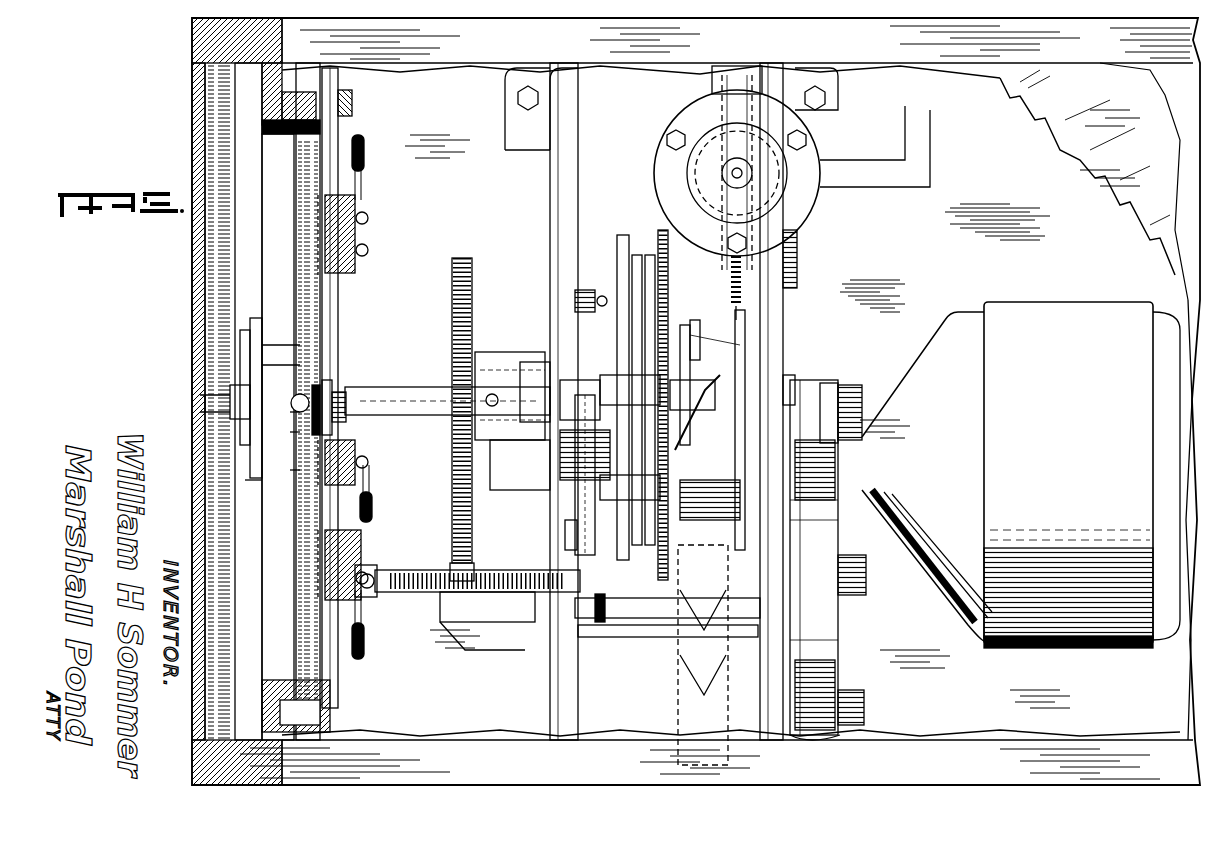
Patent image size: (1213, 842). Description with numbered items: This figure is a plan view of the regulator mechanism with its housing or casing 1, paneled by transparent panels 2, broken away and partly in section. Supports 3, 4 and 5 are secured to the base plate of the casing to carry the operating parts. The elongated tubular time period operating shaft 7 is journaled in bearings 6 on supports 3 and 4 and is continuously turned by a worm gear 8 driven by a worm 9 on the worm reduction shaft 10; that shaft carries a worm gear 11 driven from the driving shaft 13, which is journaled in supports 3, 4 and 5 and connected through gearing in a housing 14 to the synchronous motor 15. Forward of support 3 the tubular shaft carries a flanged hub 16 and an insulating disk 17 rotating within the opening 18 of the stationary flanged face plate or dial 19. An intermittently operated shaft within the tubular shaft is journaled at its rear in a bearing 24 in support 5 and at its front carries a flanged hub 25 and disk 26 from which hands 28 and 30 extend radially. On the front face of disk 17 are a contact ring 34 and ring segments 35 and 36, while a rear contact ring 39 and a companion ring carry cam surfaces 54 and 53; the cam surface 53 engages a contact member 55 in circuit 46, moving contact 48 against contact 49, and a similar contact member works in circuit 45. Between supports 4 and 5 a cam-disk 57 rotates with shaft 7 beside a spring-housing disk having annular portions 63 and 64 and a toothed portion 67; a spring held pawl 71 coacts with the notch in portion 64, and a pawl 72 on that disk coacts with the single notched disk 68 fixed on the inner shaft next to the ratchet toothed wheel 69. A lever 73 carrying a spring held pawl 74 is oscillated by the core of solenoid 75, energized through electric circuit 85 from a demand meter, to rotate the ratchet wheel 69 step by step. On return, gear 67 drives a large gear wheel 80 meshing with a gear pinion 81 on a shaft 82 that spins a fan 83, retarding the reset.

The housing or casing 1 is at (1185, 672).
The transparent panels 2 is at (1010, 98).
The support 3 is at (355, 127).
The support 4 is at (566, 170).
The support 5 is at (775, 322).
The bearings 6 is at (345, 418).
The tubular time period operating shaft 7 is at (392, 390).
The worm gear 8 is at (470, 288).
The worm 9 is at (440, 418).
The worm reduction shaft 10 is at (470, 566).
The worm gear 11 is at (416, 590).
The driving shaft 13 is at (405, 575).
The housing 14 is at (828, 560).
The synchronous motor 15 is at (1021, 475).
The flanged hub 16 is at (318, 332).
The disk 17 is at (268, 552).
The opening 18 is at (330, 682).
The flanged face plate or dial 19 is at (265, 692).
The bearing 24 is at (795, 384).
The flanged hub 25 is at (212, 428).
The plate or disk 26 is at (256, 328).
The hand 28 is at (258, 368).
The hand 30 is at (252, 344).
The contact ring 34 is at (263, 246).
The segment of a ring 35 is at (262, 400).
The segment of a ring 36 is at (262, 527).
The contact ring 39 is at (300, 242).
The circuit 45 is at (375, 507).
The circuit 46 is at (368, 155).
The contact 48 is at (318, 388).
The contact 49 is at (332, 392).
The cam surface 53 is at (302, 470).
The cam surface 54 is at (300, 436).
The contact member 55 is at (300, 415).
The cam-disk 57 is at (617, 272).
The annular portion 63 is at (652, 268).
The annular portion 64 is at (636, 258).
The annular toothed portion 67 is at (660, 236).
The single notched disk 68 is at (700, 340).
The ratchet toothed wheel 69 is at (745, 358).
The spring held pawl 71 is at (650, 447).
The spring held pawl 72 is at (707, 387).
The lever 73 is at (718, 78).
The pawl 74 is at (745, 300).
The solenoid 75 is at (790, 172).
The large gear wheel 80 is at (586, 423).
The gear pinion 81 is at (598, 625).
The shaft 82 is at (628, 634).
The fan 83 is at (684, 696).
The electric circuit 85 is at (915, 125).